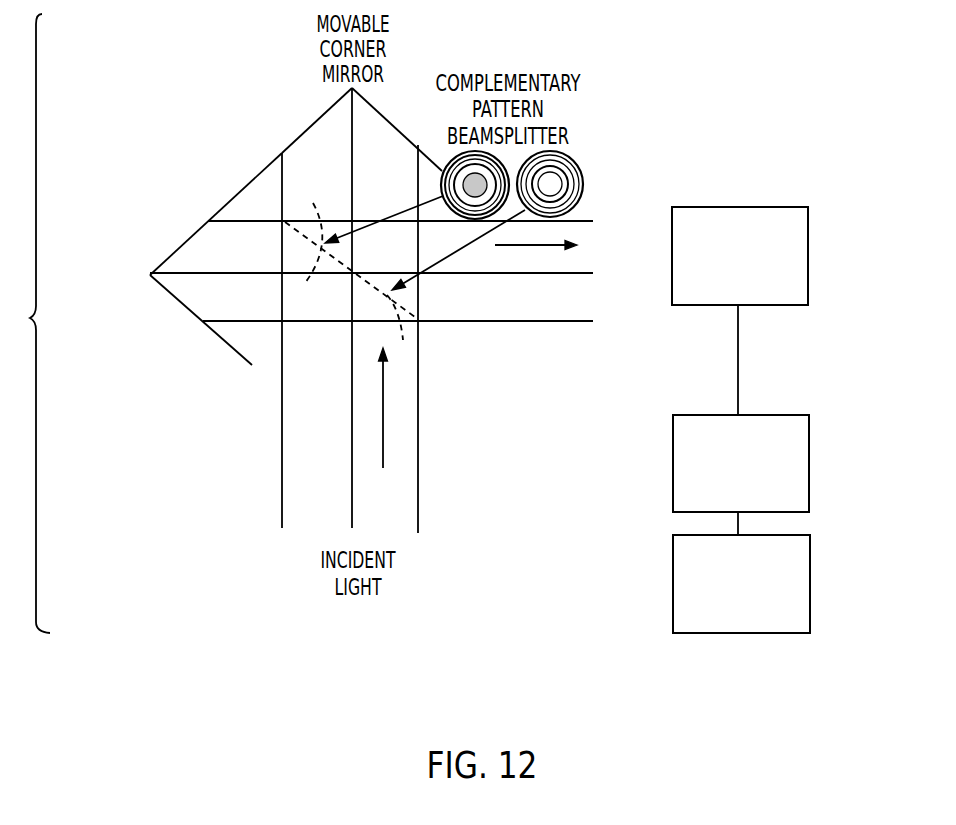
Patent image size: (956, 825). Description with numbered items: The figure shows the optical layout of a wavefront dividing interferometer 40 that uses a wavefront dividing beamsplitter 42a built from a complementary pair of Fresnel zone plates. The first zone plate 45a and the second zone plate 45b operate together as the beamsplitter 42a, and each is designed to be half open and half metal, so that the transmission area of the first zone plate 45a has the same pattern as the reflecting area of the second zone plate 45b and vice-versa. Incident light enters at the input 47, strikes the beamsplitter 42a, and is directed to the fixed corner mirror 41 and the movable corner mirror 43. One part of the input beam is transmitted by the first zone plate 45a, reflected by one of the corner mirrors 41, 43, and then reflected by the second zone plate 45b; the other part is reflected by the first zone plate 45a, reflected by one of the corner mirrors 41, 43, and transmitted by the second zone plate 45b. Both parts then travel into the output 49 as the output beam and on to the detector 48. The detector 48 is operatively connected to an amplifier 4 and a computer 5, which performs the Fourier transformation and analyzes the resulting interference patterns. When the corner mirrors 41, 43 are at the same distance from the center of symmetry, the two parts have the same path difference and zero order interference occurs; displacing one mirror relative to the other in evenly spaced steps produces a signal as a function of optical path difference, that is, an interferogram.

The amplifier 4 is at (673, 465).
The computer 5 is at (673, 587).
The wavefront dividing interferometer 40 is at (175, 386).
The fixed corner mirror 41 is at (173, 252).
The wavefront dividing beamsplitter 42a is at (313, 232).
The movable corner mirror 43 is at (297, 138).
The first zone plate 45a is at (350, 269).
The second zone plate 45b is at (400, 381).
The input 47 is at (409, 445).
The detector 48 is at (672, 258).
The output 49 is at (550, 309).